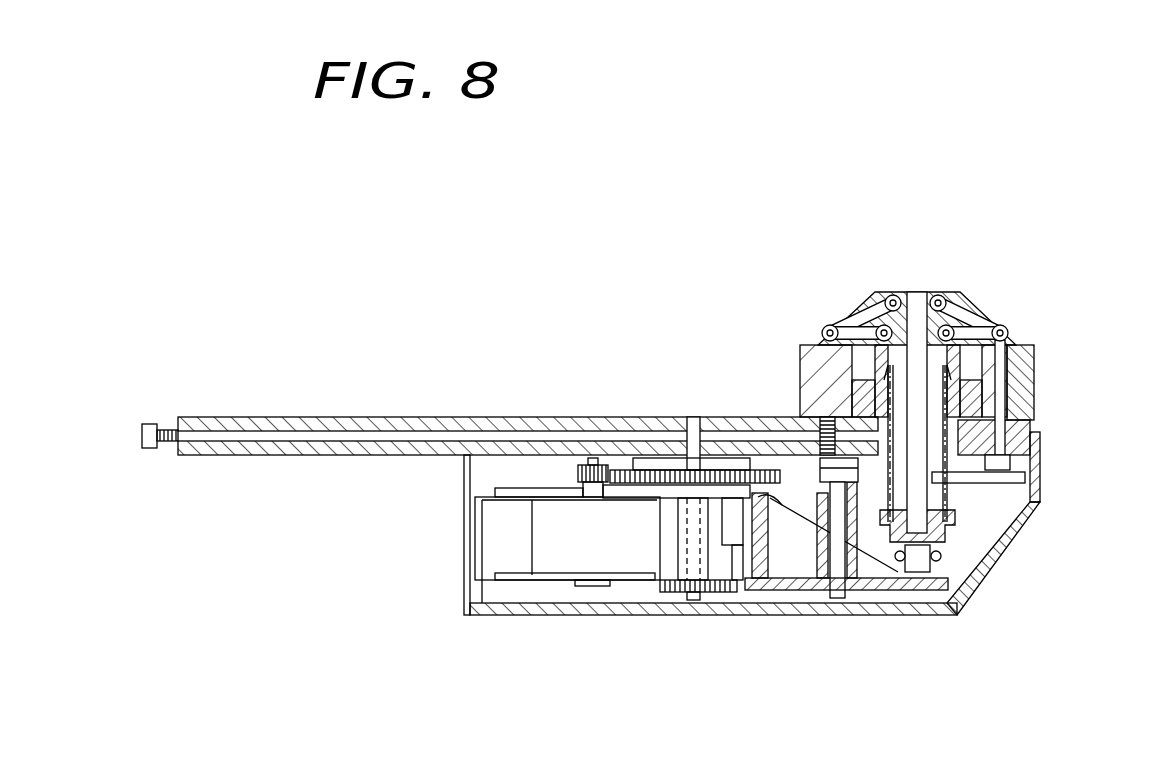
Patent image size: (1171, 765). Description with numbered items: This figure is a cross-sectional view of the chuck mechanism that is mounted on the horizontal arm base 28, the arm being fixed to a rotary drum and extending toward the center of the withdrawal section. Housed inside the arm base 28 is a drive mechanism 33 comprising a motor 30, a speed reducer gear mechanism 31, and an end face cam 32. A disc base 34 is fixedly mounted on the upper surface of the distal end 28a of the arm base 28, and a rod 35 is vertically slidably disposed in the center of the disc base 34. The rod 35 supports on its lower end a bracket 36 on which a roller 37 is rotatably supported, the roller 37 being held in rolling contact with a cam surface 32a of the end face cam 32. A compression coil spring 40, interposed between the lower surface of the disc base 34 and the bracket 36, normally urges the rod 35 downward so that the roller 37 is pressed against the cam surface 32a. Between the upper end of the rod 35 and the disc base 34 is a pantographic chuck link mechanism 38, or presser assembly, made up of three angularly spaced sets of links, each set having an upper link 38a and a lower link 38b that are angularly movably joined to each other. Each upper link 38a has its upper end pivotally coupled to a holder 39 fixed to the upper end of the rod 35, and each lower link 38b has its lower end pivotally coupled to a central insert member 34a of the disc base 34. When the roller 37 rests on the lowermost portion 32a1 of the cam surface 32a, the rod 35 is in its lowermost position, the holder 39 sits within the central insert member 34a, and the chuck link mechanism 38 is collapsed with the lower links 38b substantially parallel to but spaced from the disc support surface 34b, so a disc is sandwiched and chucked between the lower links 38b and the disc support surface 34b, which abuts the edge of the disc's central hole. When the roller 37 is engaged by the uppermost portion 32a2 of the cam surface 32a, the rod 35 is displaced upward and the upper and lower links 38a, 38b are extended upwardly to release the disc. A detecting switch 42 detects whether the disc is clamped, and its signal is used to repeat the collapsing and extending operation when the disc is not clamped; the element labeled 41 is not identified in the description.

The horizontal arm base 28 is at (290, 417).
The distal end of the arm base 28a is at (768, 417).
The motor 30 is at (540, 515).
The speed reducer gear mechanism 31 is at (622, 470).
The end face cam 32 is at (797, 567).
The cam surface 32a is at (887, 568).
The lowermost portion of the cam surface 32a1 is at (953, 597).
The uppermost portion of the cam surface 32a2 is at (748, 590).
The drive mechanism 33 is at (650, 592).
The disc base 34 is at (815, 350).
The central insert member 34a is at (965, 300).
The disc support surface 34b is at (1028, 340).
The rod 35 is at (917, 292).
The bracket 36 is at (952, 545).
The roller 37 is at (937, 562).
The pantographic chuck link mechanism 38 is at (992, 310).
The upper link 38a is at (852, 318).
The lower link 38b is at (866, 330).
The holder 39 is at (900, 292).
The compression coil spring 40 is at (1032, 503).
The block 41 is at (1035, 358).
The detecting switch 42 is at (995, 462).